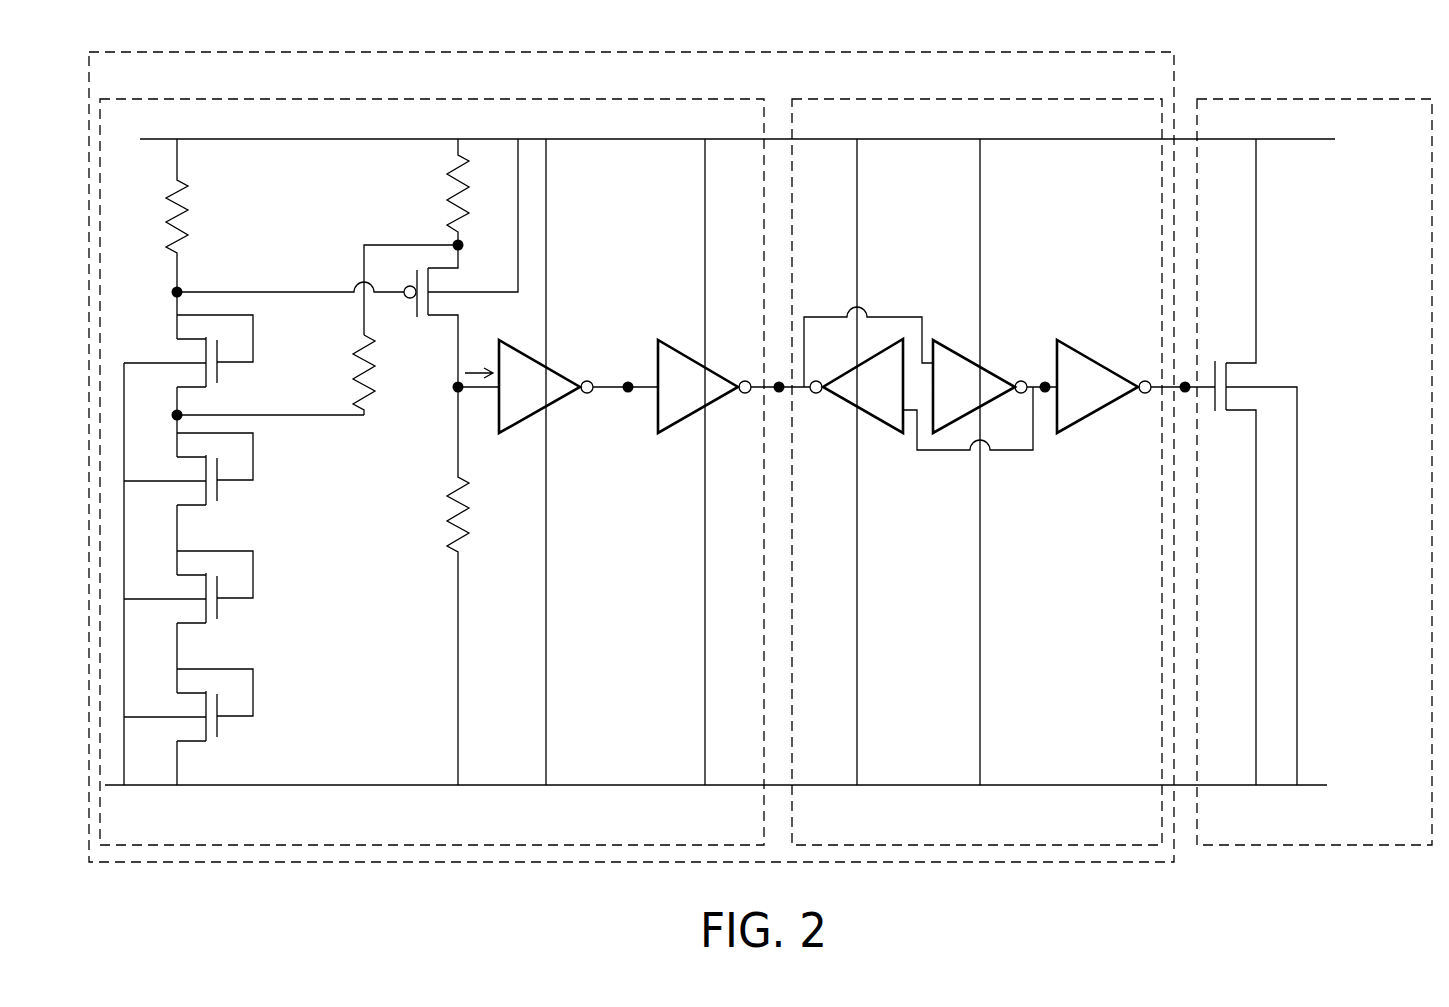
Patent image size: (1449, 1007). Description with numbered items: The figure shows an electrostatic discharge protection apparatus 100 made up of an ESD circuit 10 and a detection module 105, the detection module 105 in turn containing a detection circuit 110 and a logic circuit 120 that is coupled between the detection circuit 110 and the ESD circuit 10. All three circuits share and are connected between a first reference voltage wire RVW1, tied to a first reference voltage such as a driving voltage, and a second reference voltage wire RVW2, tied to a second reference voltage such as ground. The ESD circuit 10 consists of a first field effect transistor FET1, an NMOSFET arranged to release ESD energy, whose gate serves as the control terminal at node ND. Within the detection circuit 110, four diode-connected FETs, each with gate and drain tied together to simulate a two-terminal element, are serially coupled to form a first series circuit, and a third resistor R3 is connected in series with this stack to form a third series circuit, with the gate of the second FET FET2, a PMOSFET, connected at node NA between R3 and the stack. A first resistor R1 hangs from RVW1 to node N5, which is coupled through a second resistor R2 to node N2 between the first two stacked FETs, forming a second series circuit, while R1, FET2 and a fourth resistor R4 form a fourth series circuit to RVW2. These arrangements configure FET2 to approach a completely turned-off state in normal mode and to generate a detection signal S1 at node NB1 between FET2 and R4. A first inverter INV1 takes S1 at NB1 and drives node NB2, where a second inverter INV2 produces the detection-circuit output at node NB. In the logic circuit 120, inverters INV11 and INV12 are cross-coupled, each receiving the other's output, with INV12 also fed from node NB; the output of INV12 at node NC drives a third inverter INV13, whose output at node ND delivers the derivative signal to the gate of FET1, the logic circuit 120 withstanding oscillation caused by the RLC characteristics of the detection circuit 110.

The ESD protection apparatus 100 is at (1337, 50).
The detection module 105 is at (255, 863).
The detection circuit 110 is at (420, 846).
The logic circuit 120 is at (952, 846).
The ESD circuit 10 is at (1302, 846).
The first resistor R1 is at (441, 192).
The second resistor R2 is at (383, 375).
The third resistor R3 is at (157, 215).
The fourth resistor R4 is at (479, 586).
The first field effect transistor FET1 is at (1275, 462).
The second field effect transistor FET2 is at (468, 263).
The first inverter of the detection circuit INV1 is at (555, 403).
The second inverter of the detection circuit INV2 is at (687, 423).
The first inverter of the logic circuit INV11 is at (882, 425).
The second inverter of the logic circuit INV12 is at (953, 338).
The third inverter of the logic circuit INV13 is at (1092, 420).
The node NA is at (265, 292).
The node N2 is at (249, 415).
The node N5 is at (432, 281).
The node NB1 is at (452, 403).
The node NB2 is at (626, 403).
The node NB is at (779, 391).
The node NC is at (1043, 381).
The node ND is at (1185, 377).
The detection signal S1 is at (482, 359).
The first reference voltage wire RVW1 is at (777, 143).
The second reference voltage wire RVW2 is at (760, 783).